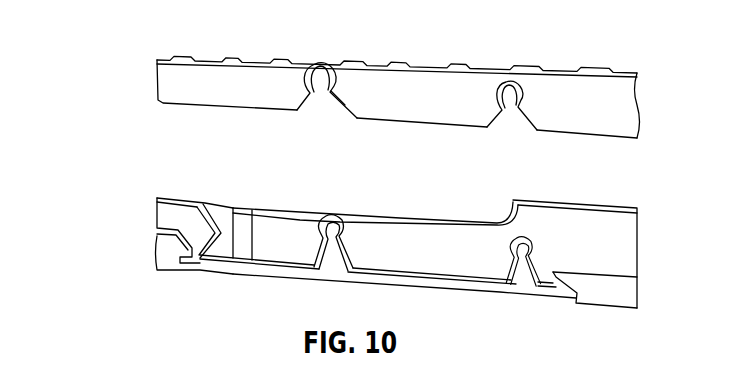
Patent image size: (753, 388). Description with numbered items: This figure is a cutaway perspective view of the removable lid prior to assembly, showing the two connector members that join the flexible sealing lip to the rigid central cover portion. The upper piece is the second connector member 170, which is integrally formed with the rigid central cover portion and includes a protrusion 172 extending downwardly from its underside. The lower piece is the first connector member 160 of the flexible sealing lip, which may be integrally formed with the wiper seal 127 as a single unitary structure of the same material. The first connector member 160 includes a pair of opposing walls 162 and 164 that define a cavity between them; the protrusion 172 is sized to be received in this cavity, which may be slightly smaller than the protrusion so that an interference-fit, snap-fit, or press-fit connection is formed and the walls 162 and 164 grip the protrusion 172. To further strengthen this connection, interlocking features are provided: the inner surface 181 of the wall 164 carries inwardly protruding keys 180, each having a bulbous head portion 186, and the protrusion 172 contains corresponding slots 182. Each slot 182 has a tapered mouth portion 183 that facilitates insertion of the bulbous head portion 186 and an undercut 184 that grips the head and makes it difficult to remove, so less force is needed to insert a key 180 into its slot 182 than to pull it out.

The wiper seal 127 is at (620, 286).
The first connector member 160 is at (408, 237).
The wall 162 is at (173, 218).
The wall 164 is at (580, 232).
The second connector member 170 is at (430, 90).
The protrusion 172 is at (613, 112).
The key 180 is at (422, 233).
The inner surface 181 is at (457, 242).
The slot 182 is at (306, 90).
The tapered mouth portion 183 is at (334, 108).
The undercut 184 is at (327, 64).
The bulbous head portion 186 is at (330, 225).